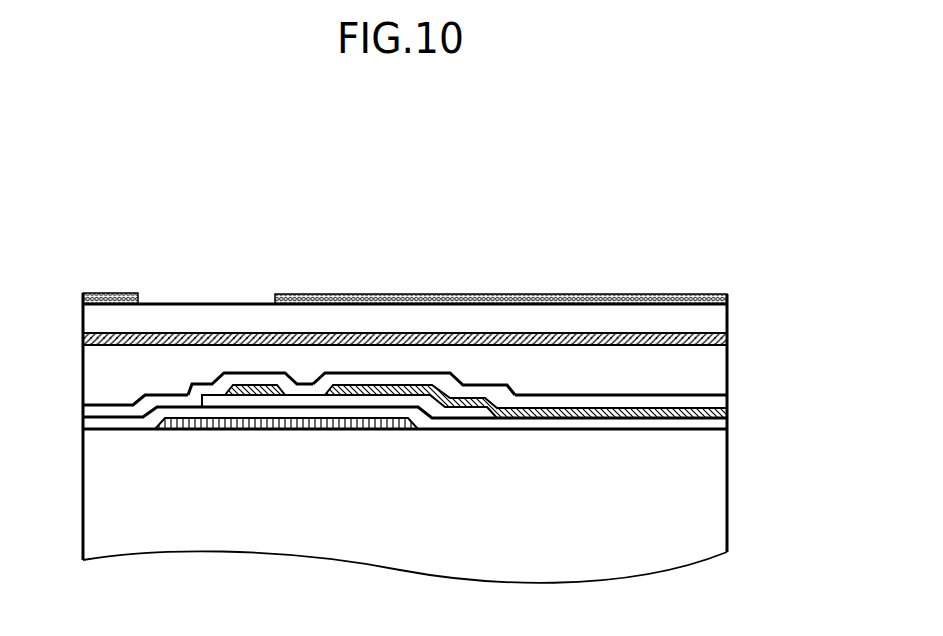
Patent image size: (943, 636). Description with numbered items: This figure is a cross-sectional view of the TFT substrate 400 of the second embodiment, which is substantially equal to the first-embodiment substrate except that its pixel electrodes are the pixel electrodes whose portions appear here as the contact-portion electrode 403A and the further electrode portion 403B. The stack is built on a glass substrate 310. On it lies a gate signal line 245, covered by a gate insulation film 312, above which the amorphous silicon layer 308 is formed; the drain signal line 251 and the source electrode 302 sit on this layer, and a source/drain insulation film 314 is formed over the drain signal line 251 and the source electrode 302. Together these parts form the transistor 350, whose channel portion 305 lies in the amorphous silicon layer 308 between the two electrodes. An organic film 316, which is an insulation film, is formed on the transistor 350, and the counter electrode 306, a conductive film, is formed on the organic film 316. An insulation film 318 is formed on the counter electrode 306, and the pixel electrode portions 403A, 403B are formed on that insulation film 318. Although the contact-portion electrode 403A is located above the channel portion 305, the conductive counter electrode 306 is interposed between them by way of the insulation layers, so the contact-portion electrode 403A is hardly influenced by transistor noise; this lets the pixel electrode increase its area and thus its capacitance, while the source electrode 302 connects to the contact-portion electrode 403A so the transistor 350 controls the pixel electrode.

The TFT substrate 400 is at (430, 172).
The contact-portion electrode 403A is at (508, 295).
The pixel electrode 403B is at (112, 293).
The channel portion 305 is at (303, 368).
The transistor 350 is at (360, 363).
The counter electrode 306 is at (128, 344).
The insulation film 318 is at (718, 322).
The organic film 316 is at (713, 368).
The source/drain insulation film 314 is at (722, 403).
The gate insulation film 312 is at (720, 425).
The glass substrate 310 is at (717, 460).
The amorphous silicon layer 308 is at (230, 402).
The drain signal line 251 is at (265, 396).
The source electrode 302 is at (355, 392).
The gate signal line 245 is at (395, 430).